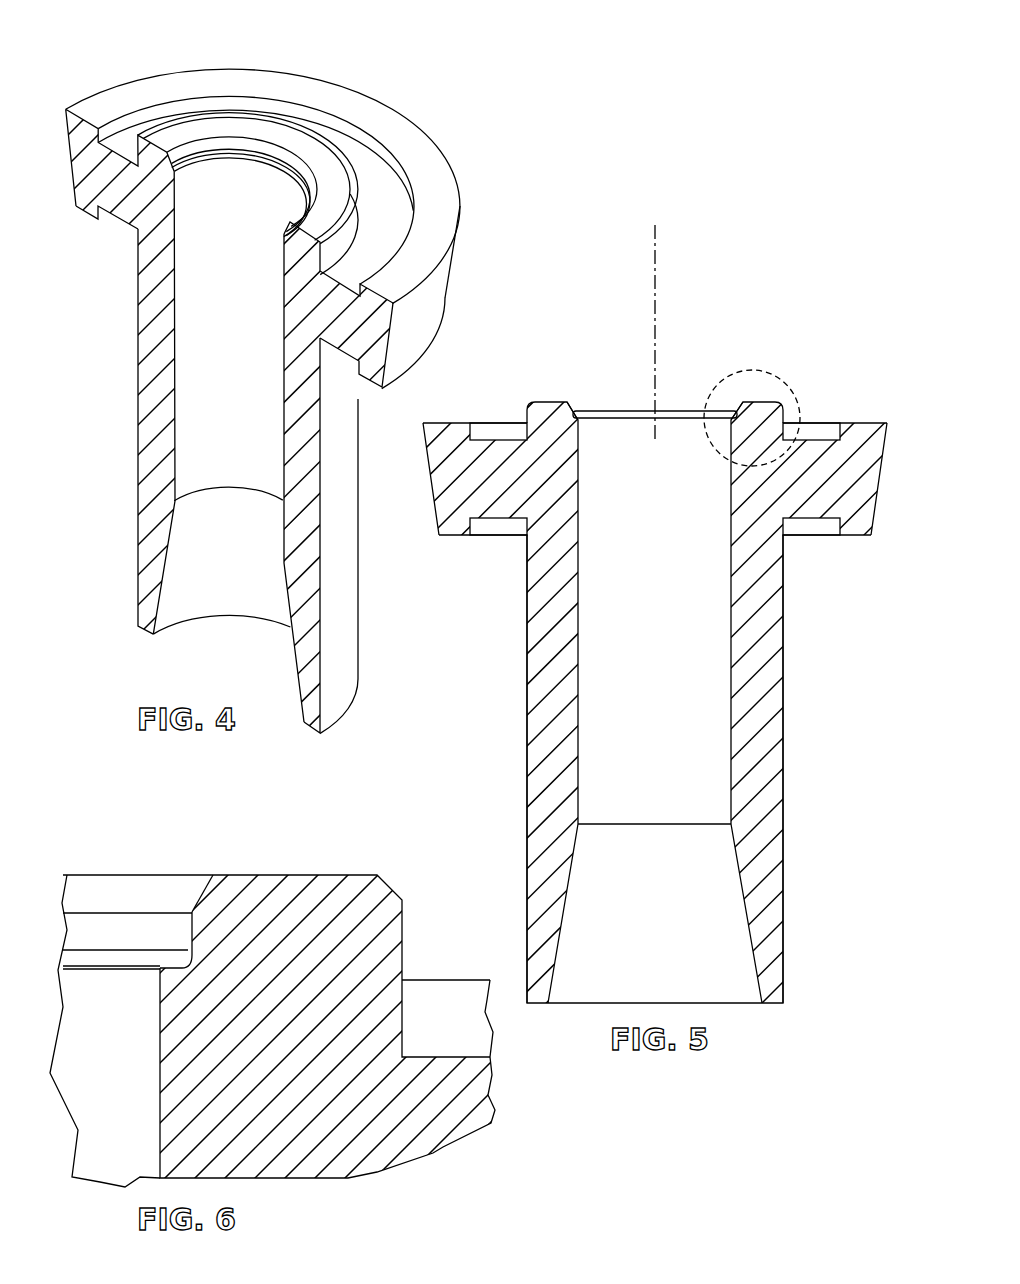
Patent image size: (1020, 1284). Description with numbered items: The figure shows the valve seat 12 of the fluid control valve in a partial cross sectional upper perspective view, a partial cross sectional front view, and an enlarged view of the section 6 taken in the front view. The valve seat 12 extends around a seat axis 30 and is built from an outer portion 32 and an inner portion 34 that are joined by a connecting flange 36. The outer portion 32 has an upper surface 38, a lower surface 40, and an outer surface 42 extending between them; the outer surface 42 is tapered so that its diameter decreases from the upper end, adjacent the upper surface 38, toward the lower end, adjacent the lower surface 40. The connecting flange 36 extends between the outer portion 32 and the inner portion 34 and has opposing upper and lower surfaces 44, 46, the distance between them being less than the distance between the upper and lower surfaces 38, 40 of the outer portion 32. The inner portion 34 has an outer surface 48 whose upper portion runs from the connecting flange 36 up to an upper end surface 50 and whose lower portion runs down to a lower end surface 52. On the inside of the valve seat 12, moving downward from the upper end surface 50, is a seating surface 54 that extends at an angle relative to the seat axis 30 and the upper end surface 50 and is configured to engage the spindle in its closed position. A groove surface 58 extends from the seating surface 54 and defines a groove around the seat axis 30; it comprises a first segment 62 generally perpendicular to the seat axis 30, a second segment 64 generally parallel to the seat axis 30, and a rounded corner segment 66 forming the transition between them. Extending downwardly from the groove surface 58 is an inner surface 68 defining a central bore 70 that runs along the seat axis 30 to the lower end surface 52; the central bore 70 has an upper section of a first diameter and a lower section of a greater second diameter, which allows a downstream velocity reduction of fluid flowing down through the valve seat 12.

In FIG. 5, the section 6- 6 is at (746, 371).
In FIG. 4, the valve seat 12 is at (440, 54).
In FIG. 5, the valve seat 12 is at (792, 226).
In FIG. 6, the valve seat 12 is at (80, 795).
In FIG. 5, the seat axis 30 is at (659, 276).
In FIG. 4, the outer portion 32 is at (465, 176).
In FIG. 5, the outer portion 32 is at (882, 418).
In FIG. 4, the inner portion 34 is at (130, 356).
In FIG. 5, the inner portion 34 is at (795, 658).
In FIG. 4, the connecting flange 36 is at (122, 212).
In FIG. 5, the connecting flange 36 is at (500, 490).
In FIG. 4, the upper surface 38 is at (130, 92).
In FIG. 5, the upper surface 38 is at (860, 423).
In FIG. 4, the lower surface 40 is at (95, 214).
In FIG. 5, the lower surface 40 is at (852, 537).
In FIG. 4, the outer surface 42 is at (68, 158).
In FIG. 5, the outer surface 42 is at (880, 480).
In FIG. 4, the upper surface of the connecting flange 44 is at (378, 180).
In FIG. 5, the upper surface of the connecting flange 44 is at (815, 423).
In FIG. 4, the lower surface of the connecting flange 46 is at (340, 345).
In FIG. 5, the lower surface of the connecting flange 46 is at (818, 525).
In FIG. 4, the outer surface of the inner portion 48 is at (347, 594).
In FIG. 5, the outer surface of the inner portion 48 is at (525, 655).
In FIG. 4, the upper end surface 50 is at (261, 128).
In FIG. 5, the upper end surface 50 is at (545, 400).
In FIG. 6, the upper end surface 50 is at (300, 873).
In FIG. 4, the lower end surface 52 is at (141, 628).
In FIG. 5, the lower end surface 52 is at (775, 1003).
In FIG. 4, the seating surface 54 is at (197, 143).
In FIG. 5, the seating surface 54 is at (575, 410).
In FIG. 6, the seating surface 54 is at (203, 897).
In FIG. 4, the groove surface 58 is at (300, 160).
In FIG. 5, the groove surface 58 is at (604, 408).
In FIG. 6, the groove surface 58 is at (140, 925).
In FIG. 6, the first segment 62 is at (97, 962).
In FIG. 6, the second segment 64 is at (100, 925).
In FIG. 6, the corner segment 66 is at (178, 958).
In FIG. 4, the inner surface 68 is at (176, 408).
In FIG. 5, the inner surface 68 is at (577, 735).
In FIG. 4, the central bore 70 is at (222, 298).
In FIG. 5, the central bore 70 is at (655, 780).